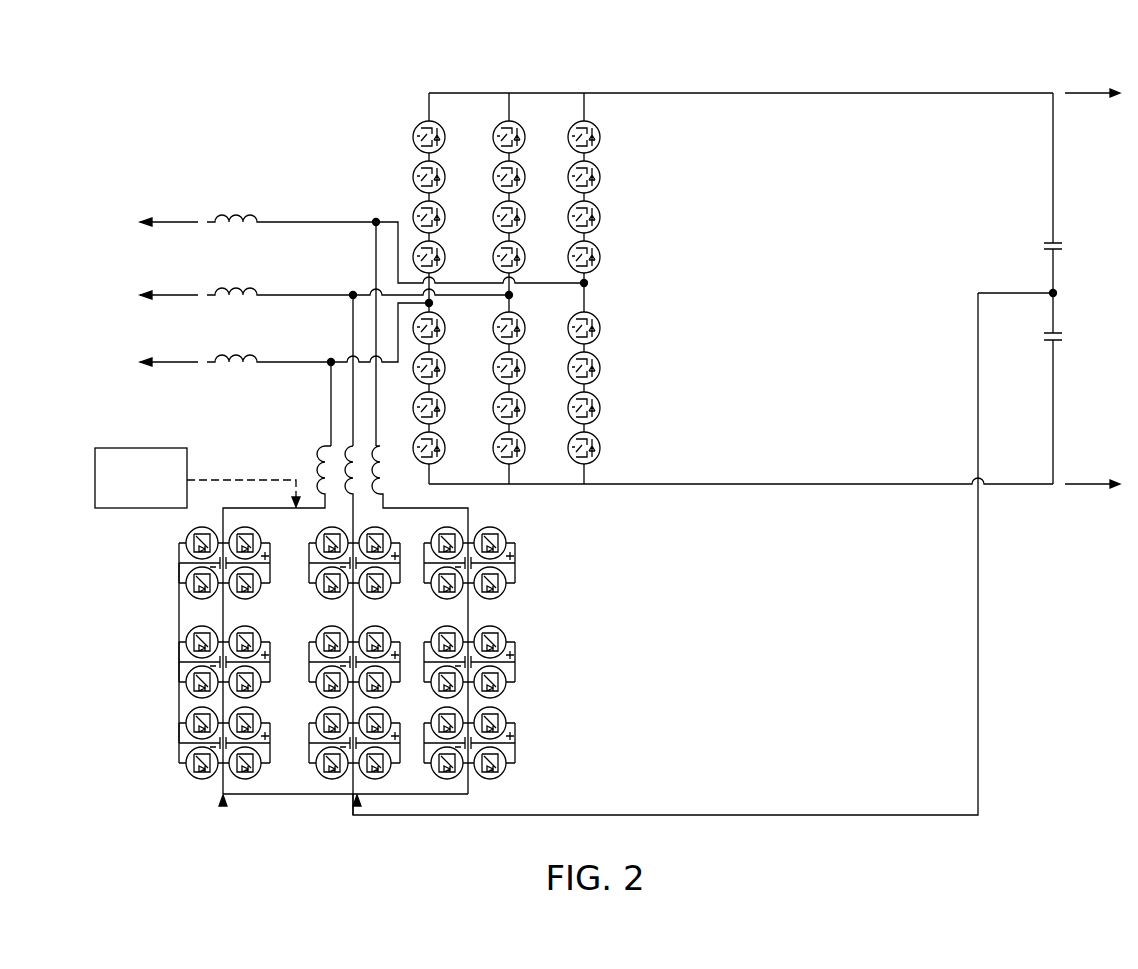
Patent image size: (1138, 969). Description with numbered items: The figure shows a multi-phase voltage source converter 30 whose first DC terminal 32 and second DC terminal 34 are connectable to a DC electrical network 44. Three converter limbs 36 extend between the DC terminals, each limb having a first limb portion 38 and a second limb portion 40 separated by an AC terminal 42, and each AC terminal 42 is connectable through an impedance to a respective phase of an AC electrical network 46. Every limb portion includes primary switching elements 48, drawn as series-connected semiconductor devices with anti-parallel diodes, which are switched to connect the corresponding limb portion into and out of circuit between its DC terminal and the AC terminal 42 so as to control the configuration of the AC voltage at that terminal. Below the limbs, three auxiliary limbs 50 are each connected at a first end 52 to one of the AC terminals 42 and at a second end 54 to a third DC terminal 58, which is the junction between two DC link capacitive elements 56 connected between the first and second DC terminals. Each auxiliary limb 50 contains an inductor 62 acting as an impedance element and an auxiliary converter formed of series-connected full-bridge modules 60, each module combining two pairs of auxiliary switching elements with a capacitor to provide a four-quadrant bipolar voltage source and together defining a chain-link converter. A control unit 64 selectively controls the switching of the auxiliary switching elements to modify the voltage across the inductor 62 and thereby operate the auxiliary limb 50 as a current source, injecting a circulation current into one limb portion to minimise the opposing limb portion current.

The power converter 30 is at (301, 83).
The positive DC rail 32 is at (1056, 100).
The negative DC rail 34 is at (1050, 480).
The phase legs 36 is at (585, 80).
The positive DC bus connection 38 is at (572, 115).
The negative DC bus connection 40 is at (576, 490).
The phase leg midpoint connections 42 is at (479, 343).
The DC output terminals 44 is at (1094, 483).
The AC phase terminals 46 is at (175, 359).
The IGBT switching devices 48 is at (571, 423).
The chain-link converter branches 50 is at (359, 806).
The AC connection nodes 52 is at (329, 358).
The DC midpoint connection 54 is at (347, 800).
The DC link capacitors 56 is at (1050, 248).
The DC link midpoint 58 is at (1058, 293).
The H-bridge cells 60 is at (517, 744).
The inductors 62 is at (373, 473).
The control unit 64 is at (143, 446).